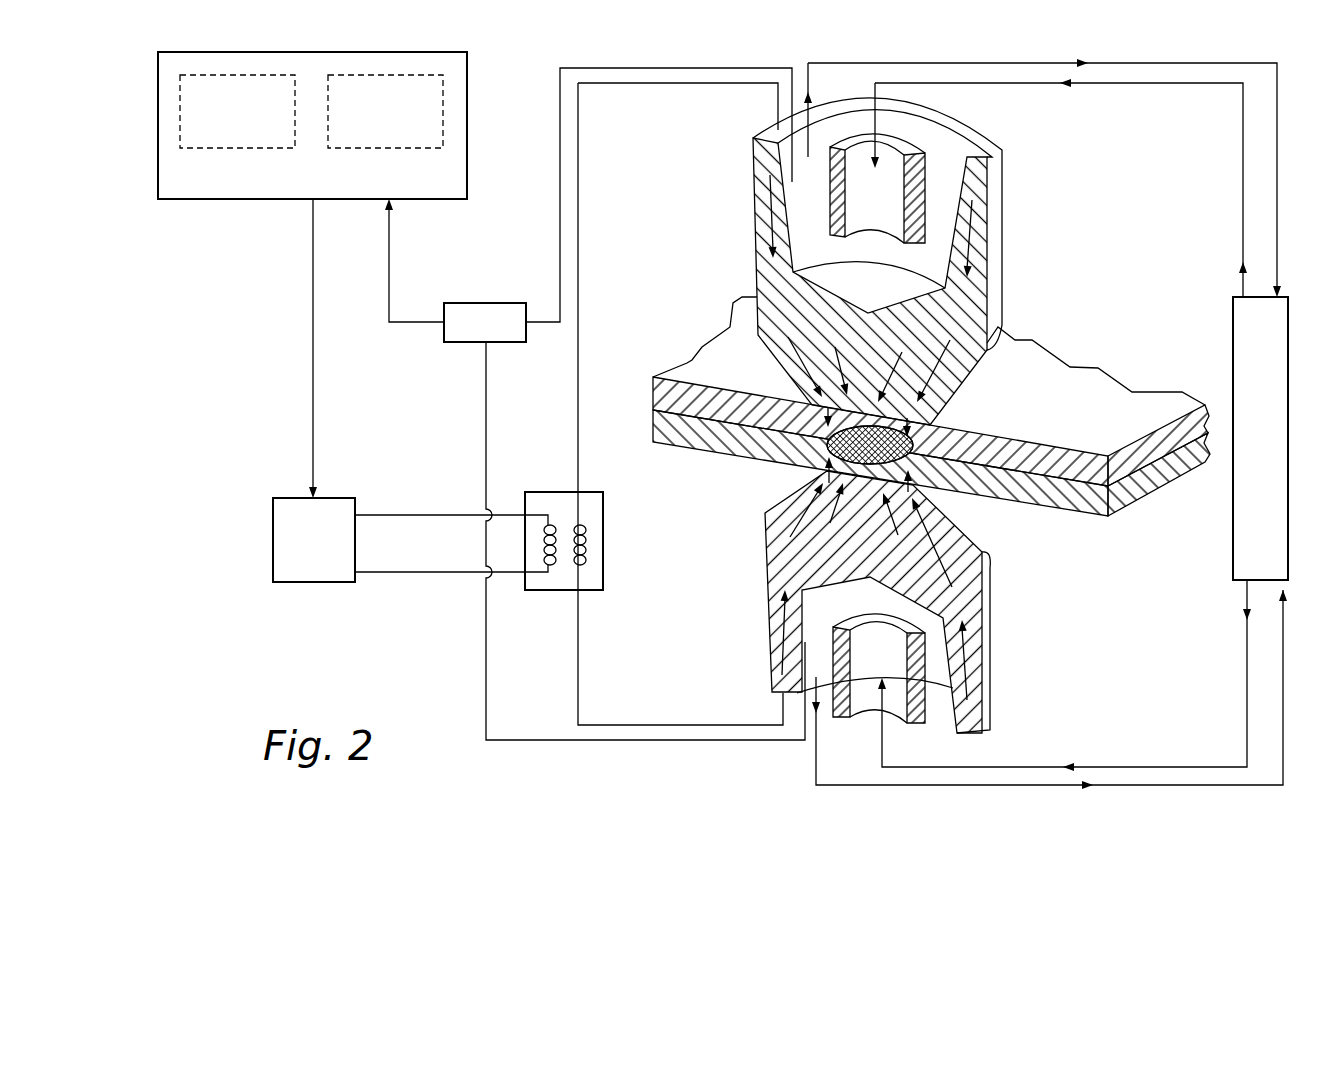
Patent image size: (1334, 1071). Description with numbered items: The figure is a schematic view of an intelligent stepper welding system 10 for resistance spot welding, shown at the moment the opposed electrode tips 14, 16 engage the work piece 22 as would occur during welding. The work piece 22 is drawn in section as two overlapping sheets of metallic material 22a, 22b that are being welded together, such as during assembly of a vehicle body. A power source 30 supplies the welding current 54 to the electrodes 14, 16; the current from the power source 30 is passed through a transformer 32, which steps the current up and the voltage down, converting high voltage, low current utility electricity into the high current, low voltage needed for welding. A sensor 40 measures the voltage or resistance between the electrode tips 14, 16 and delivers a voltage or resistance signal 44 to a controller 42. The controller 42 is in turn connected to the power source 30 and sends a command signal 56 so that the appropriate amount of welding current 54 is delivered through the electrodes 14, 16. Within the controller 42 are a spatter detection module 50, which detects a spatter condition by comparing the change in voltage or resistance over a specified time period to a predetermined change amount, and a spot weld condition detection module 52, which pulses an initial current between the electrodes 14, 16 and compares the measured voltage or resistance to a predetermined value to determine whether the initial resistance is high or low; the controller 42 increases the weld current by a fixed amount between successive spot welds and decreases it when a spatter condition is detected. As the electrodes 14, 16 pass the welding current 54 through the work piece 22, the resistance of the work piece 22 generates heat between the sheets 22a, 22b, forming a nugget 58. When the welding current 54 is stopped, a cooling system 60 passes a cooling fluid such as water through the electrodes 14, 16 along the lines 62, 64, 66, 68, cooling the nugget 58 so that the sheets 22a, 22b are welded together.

The intelligent stepper welding system 10 is at (228, 458).
The electrode tip 14 is at (1003, 243).
The electrode tip 16 is at (990, 638).
The work piece 22 is at (903, 424).
The sheet of metallic material 22a is at (1137, 503).
The sheet of metallic material 22b is at (1005, 437).
The power source 30 is at (302, 585).
The transformer 32 is at (603, 545).
The sensor 40 is at (485, 303).
The controller 42 is at (347, 125).
The voltage or resistance signal 44 is at (408, 323).
The spatter detection module 50 is at (237, 148).
The spot weld condition detection module 52 is at (389, 148).
The welding current 54 is at (578, 263).
The command signal 56 is at (313, 385).
The nugget 58 is at (832, 440).
The cooling system 60 is at (1245, 365).
The cooling fluid line 62 is at (1142, 767).
The cooling fluid line 64 is at (1007, 787).
The cooling fluid line 66 is at (1136, 84).
The cooling fluid line 68 is at (1028, 63).